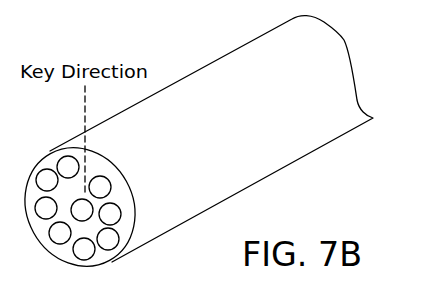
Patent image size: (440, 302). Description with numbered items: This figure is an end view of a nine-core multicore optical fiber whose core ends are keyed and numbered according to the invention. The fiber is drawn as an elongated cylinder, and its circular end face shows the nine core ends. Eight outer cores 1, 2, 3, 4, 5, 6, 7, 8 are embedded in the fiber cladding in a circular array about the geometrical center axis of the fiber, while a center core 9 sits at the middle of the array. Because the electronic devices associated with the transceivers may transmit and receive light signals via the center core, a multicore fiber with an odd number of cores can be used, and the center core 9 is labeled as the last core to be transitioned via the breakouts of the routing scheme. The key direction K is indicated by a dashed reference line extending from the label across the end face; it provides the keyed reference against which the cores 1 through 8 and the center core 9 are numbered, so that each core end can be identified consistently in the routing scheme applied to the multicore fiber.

The core 1 is at (68, 167).
The core 2 is at (100, 187).
The core 3 is at (47, 180).
The core 4 is at (110, 214).
The core 5 is at (46, 208).
The core 6 is at (108, 239).
The core 7 is at (60, 233).
The core 8 is at (84, 249).
The center core 9 is at (82, 210).
The key direction K is at (83, 107).